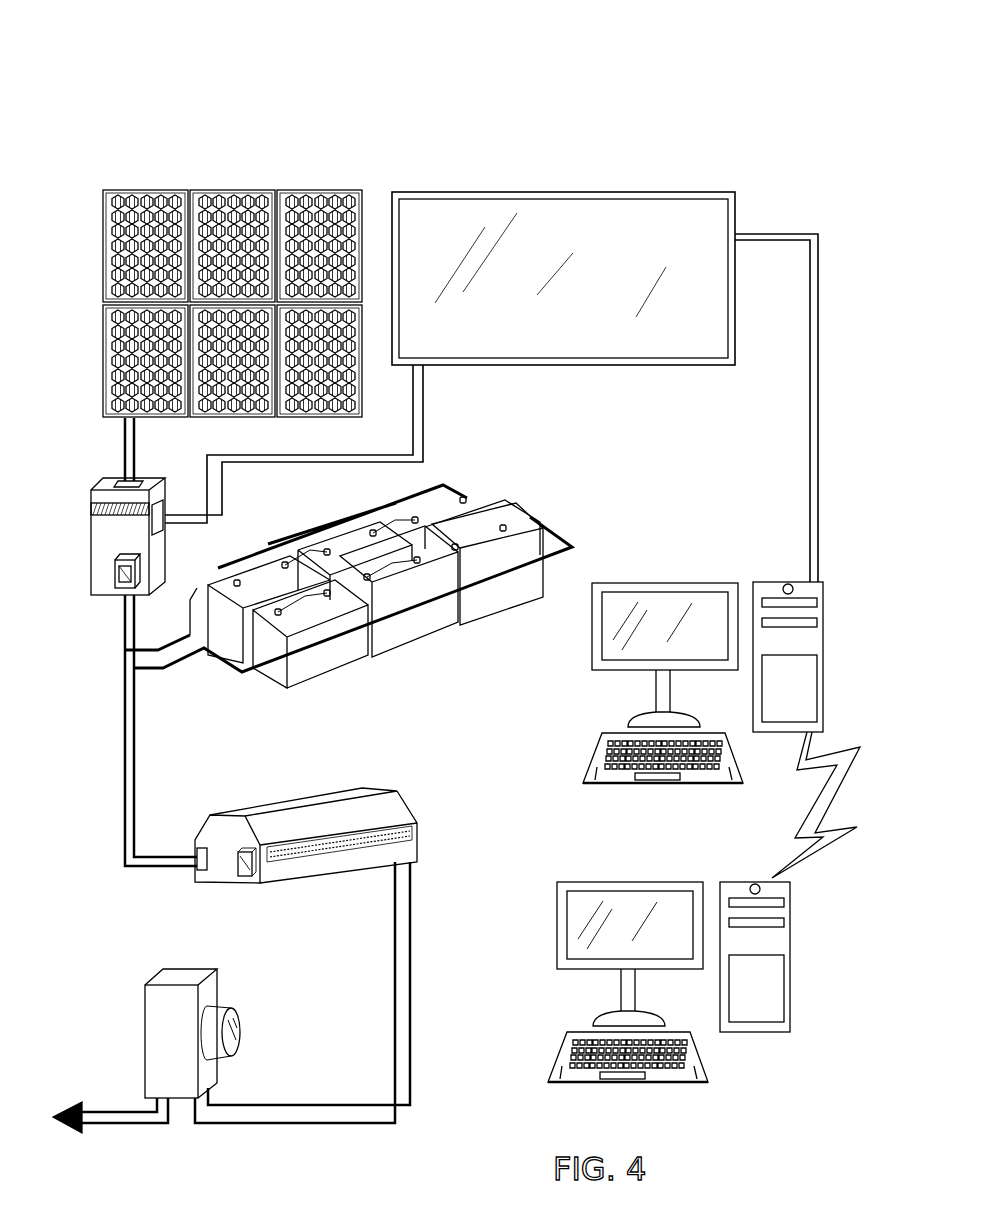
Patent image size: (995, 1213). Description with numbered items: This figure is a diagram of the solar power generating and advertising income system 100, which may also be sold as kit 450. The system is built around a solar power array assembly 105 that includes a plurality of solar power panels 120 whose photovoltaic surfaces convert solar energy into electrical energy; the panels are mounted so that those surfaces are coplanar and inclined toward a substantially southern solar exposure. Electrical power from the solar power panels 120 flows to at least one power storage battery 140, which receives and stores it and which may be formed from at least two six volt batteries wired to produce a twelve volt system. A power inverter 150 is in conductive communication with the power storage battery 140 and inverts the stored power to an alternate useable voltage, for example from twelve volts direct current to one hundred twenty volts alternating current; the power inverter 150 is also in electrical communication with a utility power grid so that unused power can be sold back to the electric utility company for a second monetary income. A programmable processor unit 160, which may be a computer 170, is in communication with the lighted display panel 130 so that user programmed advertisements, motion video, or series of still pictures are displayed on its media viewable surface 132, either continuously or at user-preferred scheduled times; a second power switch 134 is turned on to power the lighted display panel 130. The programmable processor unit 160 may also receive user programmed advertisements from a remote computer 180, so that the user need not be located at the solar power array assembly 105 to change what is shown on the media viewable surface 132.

The solar power generating and advertising income system 100 is at (703, 80).
The kit 450 is at (716, 111).
The solar power array assembly 105 is at (320, 110).
The solar power panels 120 is at (218, 188).
The lighted display panel 130 is at (624, 188).
The media viewable surface 132 is at (660, 322).
The second power switch 134 is at (108, 566).
The power storage battery 140 is at (486, 496).
The power inverter 150 is at (325, 791).
The programmable processor unit 160 is at (655, 578).
The computer 170 is at (628, 578).
The remote computer 180 is at (724, 876).